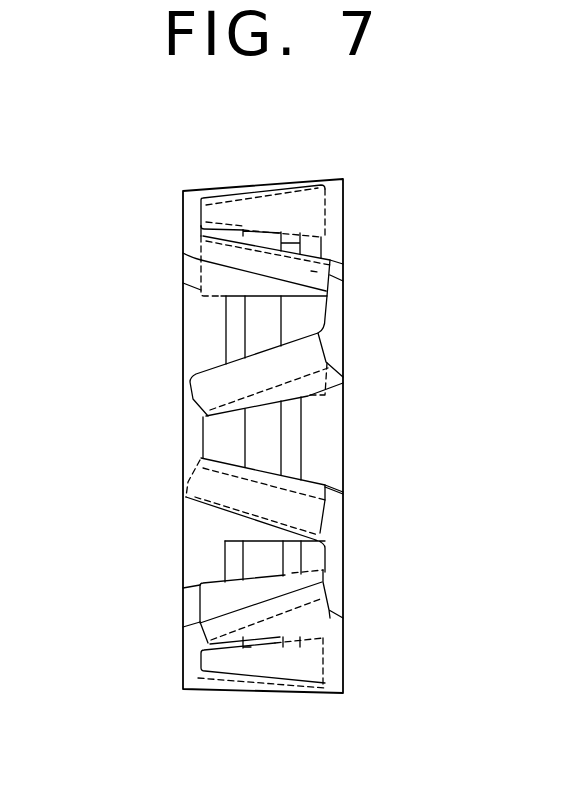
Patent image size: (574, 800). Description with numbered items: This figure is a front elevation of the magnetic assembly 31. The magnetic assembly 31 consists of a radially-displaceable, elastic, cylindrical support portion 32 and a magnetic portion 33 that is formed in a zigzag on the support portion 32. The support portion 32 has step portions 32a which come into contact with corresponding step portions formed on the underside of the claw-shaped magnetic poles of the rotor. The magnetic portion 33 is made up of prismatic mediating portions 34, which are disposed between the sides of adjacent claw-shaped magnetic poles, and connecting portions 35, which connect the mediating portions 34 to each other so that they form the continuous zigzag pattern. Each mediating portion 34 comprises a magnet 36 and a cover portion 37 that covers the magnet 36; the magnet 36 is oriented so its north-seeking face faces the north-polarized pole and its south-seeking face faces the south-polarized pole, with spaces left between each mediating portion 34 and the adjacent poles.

The magnetic assembly 31 is at (472, 431).
The support portion 32 is at (187, 342).
The step portions 32a is at (275, 450).
The magnetic portion 33 is at (330, 533).
The mediating portions 34 is at (241, 505).
The connecting portions 35 is at (338, 316).
The magnet 36 is at (343, 283).
The cover portion 37 is at (312, 608).